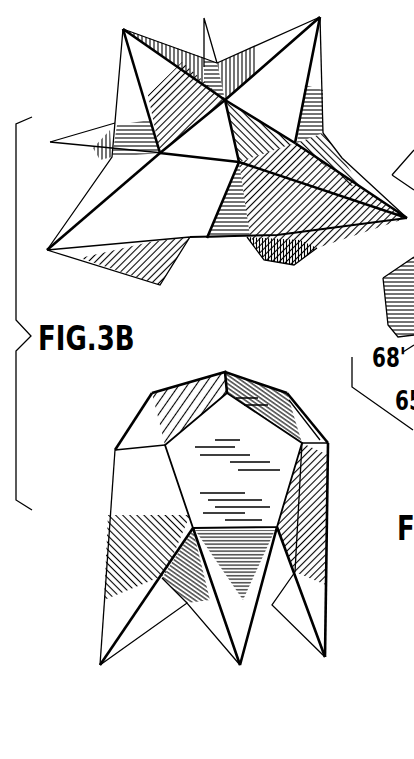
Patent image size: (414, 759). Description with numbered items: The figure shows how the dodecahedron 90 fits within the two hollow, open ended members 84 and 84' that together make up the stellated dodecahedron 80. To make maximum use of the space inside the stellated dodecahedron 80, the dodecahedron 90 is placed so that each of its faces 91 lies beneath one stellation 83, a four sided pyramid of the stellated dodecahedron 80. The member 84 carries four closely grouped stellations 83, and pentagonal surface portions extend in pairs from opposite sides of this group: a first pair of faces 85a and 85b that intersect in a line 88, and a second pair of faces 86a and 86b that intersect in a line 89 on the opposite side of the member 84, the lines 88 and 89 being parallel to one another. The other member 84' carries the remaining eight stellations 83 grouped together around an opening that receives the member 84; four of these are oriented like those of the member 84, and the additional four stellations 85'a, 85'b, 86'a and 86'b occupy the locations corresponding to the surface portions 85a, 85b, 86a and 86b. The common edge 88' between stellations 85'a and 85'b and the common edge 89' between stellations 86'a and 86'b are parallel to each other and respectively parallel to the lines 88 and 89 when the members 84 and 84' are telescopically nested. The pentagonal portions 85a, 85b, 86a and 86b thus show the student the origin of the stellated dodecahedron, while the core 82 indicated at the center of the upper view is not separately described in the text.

The stellated dodecahedron 80 is at (347, 27).
The central core member 82 is at (239, 165).
The stellation 83 is at (334, 125).
The member 84 is at (290, 596).
The other member 84' is at (133, 88).
The face 85a is at (131, 428).
The face 85b is at (130, 472).
The stellation 85'a is at (94, 160).
The stellation 85'b is at (118, 232).
The face 86a is at (306, 434).
The face 86b is at (304, 508).
The stellation 86'a is at (355, 156).
The stellation 86'b is at (288, 274).
The line 88 is at (134, 573).
The common edge 88' is at (85, 139).
The line 89 is at (346, 550).
The common edge 89' is at (346, 75).
The dodecahedron 90 is at (248, 392).
The face 91 is at (197, 428).